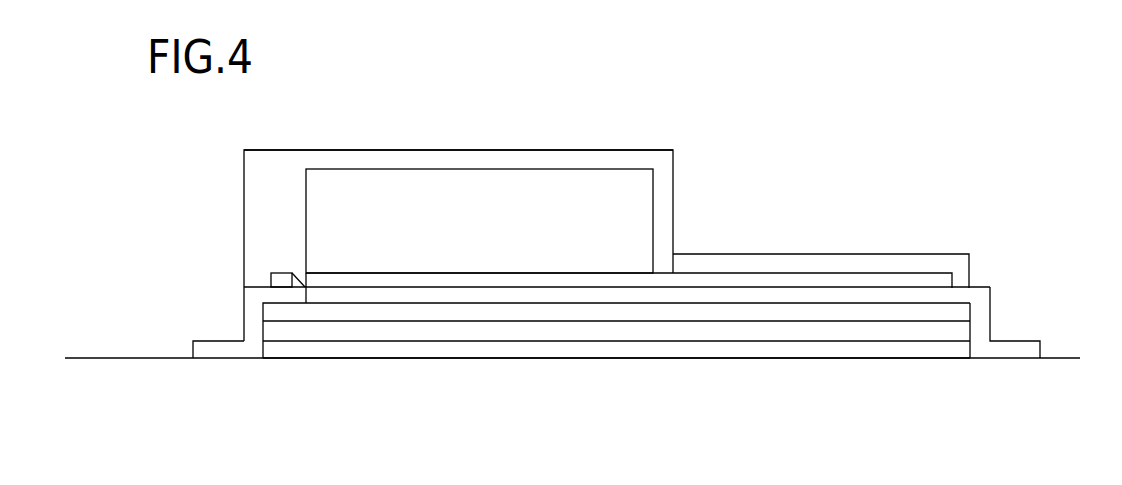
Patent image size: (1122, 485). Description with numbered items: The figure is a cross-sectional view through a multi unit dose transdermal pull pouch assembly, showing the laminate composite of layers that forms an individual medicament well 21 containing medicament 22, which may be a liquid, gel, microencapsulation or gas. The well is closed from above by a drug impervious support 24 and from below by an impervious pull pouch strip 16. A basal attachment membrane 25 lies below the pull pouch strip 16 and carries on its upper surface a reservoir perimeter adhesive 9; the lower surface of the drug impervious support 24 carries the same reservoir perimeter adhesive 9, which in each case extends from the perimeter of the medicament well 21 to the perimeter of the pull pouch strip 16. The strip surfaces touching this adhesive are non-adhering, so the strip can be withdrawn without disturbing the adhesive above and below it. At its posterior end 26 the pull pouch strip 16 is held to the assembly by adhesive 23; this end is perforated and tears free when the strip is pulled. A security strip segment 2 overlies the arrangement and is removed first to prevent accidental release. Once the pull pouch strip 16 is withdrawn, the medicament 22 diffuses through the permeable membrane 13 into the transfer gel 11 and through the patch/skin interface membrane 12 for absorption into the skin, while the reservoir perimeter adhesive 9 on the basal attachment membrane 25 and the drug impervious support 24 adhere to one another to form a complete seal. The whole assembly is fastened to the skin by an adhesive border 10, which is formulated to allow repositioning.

The posterior end 26 is at (244, 205).
The drug impervious support 24 is at (608, 157).
The medicament well 21 is at (502, 215).
The medicament 22 is at (402, 218).
The security strip segment 2 is at (777, 260).
The pull pouch strip 16 is at (857, 280).
The reservoir perimeter adhesive 9 is at (307, 267).
The adhesive 23 is at (256, 290).
The permeable membrane 13 is at (622, 313).
The transfer gel 11 is at (802, 335).
The patch/skin interface membrane 12 is at (533, 350).
The adhesive border 10 is at (1012, 363).
The basal attachment membrane 25 is at (218, 351).